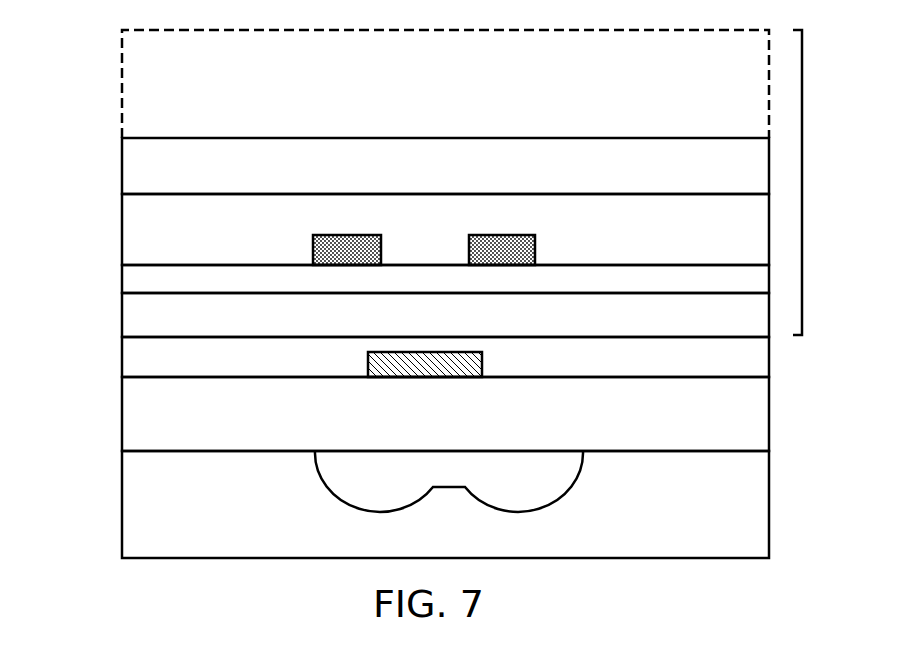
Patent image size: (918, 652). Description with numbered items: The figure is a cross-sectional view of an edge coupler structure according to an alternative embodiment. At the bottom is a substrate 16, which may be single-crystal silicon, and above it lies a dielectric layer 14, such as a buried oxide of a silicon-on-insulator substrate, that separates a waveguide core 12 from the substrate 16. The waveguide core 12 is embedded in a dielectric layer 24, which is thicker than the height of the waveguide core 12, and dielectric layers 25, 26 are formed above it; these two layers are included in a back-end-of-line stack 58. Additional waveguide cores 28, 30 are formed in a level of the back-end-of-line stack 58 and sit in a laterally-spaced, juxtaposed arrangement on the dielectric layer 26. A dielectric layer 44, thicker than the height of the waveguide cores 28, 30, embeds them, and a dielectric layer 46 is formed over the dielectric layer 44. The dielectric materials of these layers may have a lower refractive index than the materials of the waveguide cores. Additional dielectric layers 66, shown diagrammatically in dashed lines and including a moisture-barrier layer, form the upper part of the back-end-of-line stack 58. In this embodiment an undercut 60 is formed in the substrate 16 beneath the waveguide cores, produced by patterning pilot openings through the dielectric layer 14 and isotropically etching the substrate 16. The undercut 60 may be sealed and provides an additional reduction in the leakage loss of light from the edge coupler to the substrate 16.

The additional dielectric layers 66 is at (178, 97).
The dielectric layer 46 is at (163, 173).
The dielectric layer 44 is at (163, 229).
The dielectric layer 26 is at (163, 285).
The dielectric layer 25 is at (163, 320).
The dielectric layer 24 is at (163, 367).
The dielectric layer 14 is at (722, 410).
The substrate 16 is at (730, 482).
The waveguide core 28 is at (353, 254).
The waveguide core 30 is at (510, 253).
The waveguide core 12 is at (462, 362).
The undercut 60 is at (458, 480).
The back-end-of-line stack 58 is at (802, 182).